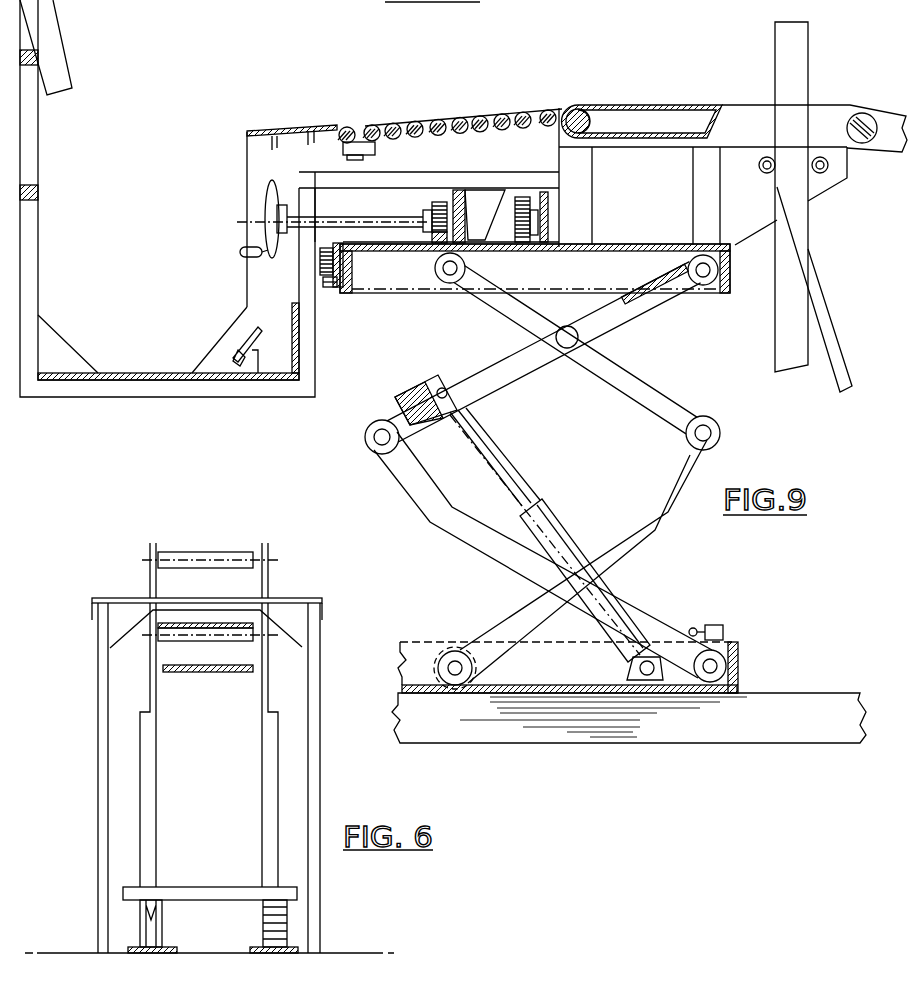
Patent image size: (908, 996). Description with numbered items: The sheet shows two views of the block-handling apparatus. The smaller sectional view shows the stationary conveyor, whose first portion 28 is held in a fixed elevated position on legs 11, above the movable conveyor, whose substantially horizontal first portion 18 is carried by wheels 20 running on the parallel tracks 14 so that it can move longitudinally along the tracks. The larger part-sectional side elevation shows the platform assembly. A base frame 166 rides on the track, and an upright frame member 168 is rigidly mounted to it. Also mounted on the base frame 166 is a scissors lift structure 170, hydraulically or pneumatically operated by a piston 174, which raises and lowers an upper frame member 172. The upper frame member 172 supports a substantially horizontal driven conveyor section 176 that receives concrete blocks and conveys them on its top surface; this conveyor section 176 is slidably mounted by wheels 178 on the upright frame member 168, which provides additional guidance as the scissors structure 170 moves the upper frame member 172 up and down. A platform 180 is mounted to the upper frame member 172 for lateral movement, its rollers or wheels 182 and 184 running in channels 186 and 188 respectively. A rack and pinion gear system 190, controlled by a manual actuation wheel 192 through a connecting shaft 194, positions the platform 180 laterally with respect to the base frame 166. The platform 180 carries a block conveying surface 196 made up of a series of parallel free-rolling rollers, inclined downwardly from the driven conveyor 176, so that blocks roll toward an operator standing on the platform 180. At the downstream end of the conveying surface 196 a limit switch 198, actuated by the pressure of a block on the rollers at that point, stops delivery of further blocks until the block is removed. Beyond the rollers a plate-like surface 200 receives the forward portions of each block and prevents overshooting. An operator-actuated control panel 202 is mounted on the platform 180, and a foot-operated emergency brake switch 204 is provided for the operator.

In FIG. 6, the legs 11 is at (102, 747).
In FIG. 6, the parallel tracks 14 is at (263, 955).
In FIG. 6, the first portion 18 is at (200, 623).
In FIG. 6, the wheels 20 is at (263, 933).
In FIG. 6, the first portion 28 is at (197, 553).
In FIG. 9, the base frame 166 is at (830, 700).
In FIG. 9, the upright frame member 168 is at (805, 81).
In FIG. 9, the scissors lift structure 170 is at (737, 655).
In FIG. 9, the upper frame member 172 is at (398, 283).
In FIG. 9, the piston 174 is at (620, 607).
In FIG. 9, the conveyor section 176 is at (610, 105).
In FIG. 9, the wheels 178 is at (823, 173).
In FIG. 9, the platform 180 is at (150, 373).
In FIG. 9, the rollers or wheels 182 is at (320, 262).
In FIG. 9, the rollers or wheels 184 is at (540, 213).
In FIG. 9, the channel 186 is at (330, 288).
In FIG. 9, the channel 188 is at (522, 198).
In FIG. 9, the rack and pinion gear system 190 is at (440, 197).
In FIG. 9, the manual actuation wheel 192 is at (267, 208).
In FIG. 9, the connecting shaft 194 is at (388, 217).
In FIG. 9, the block conveying surface 196 is at (416, 108).
In FIG. 9, the limit switch 198 is at (365, 140).
In FIG. 9, the plate-like surface 200 is at (297, 127).
In FIG. 9, the control panel 202 is at (55, 34).
In FIG. 9, the foot-operated emergency brake switch 204 is at (233, 365).